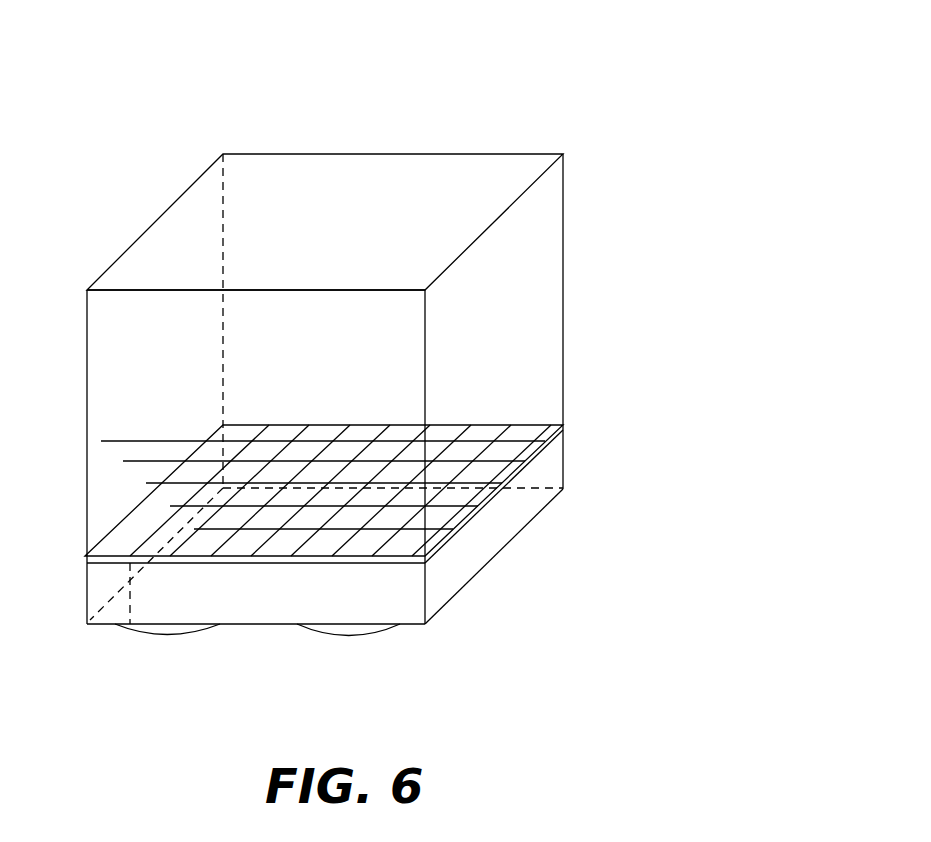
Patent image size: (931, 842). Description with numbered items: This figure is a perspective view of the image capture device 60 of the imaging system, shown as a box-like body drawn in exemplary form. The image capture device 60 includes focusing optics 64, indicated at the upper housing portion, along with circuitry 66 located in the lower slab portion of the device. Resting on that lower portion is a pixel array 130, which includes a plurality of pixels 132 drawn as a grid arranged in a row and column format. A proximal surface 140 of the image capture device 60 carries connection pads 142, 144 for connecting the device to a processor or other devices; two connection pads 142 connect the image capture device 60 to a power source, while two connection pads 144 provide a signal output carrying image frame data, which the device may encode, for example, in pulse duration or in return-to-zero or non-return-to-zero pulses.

The image capture device 60 is at (309, 329).
The focusing optics 64 is at (118, 392).
The circuitry 66 is at (268, 596).
The pixel array 130 is at (358, 567).
The pixels 132 is at (365, 423).
The proximal surface 140 is at (442, 610).
The connection pads 142 is at (165, 634).
The connection pads 144 is at (357, 636).